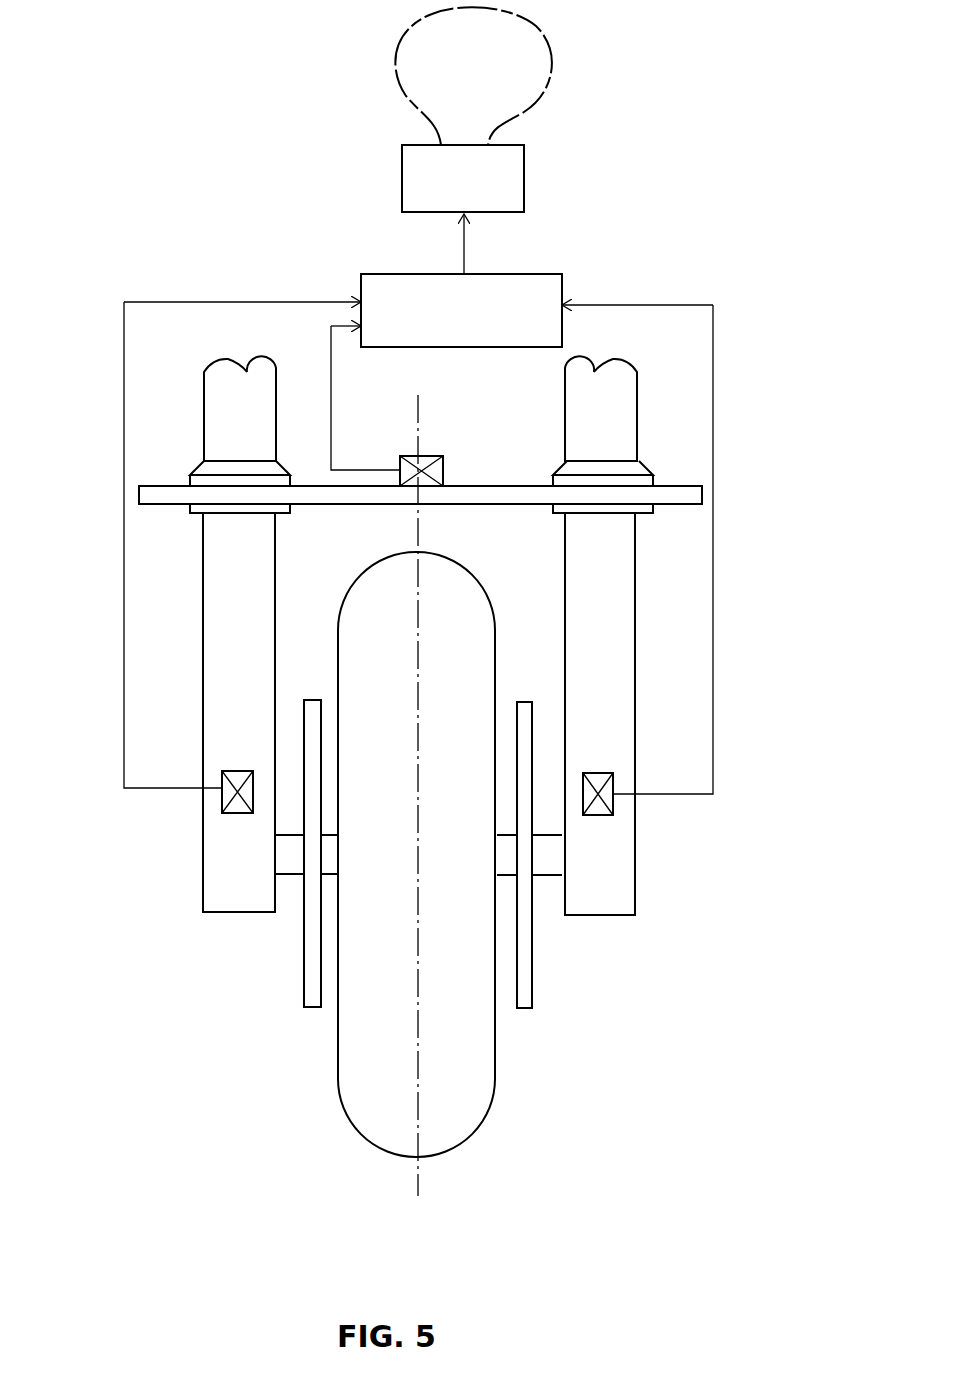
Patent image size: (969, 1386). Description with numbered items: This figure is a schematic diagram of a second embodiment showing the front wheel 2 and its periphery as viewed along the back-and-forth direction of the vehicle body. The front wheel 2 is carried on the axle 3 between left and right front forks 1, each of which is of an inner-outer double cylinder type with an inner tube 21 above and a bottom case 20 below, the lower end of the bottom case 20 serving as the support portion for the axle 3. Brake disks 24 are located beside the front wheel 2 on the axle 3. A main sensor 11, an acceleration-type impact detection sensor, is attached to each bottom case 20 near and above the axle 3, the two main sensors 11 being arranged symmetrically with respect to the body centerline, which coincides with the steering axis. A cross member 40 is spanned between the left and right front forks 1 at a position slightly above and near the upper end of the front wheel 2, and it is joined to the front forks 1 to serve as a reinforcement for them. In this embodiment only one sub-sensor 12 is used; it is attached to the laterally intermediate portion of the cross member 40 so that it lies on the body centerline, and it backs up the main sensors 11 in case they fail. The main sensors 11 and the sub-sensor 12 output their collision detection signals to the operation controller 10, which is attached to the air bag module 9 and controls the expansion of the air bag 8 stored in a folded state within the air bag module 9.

The air bag 8 is at (534, 68).
The air bag module 9 is at (520, 166).
The operation controller 10 is at (522, 284).
The sub-sensor 12 is at (425, 456).
The cross member 40 is at (508, 506).
The inner tube 21 is at (225, 412).
The bottom case 20 is at (419, 714).
The front fork 1 is at (419, 752).
The main sensor 11 is at (215, 797).
The axle 3 is at (283, 876).
The brake disk 24 is at (305, 1007).
The front wheel 2 is at (350, 1082).